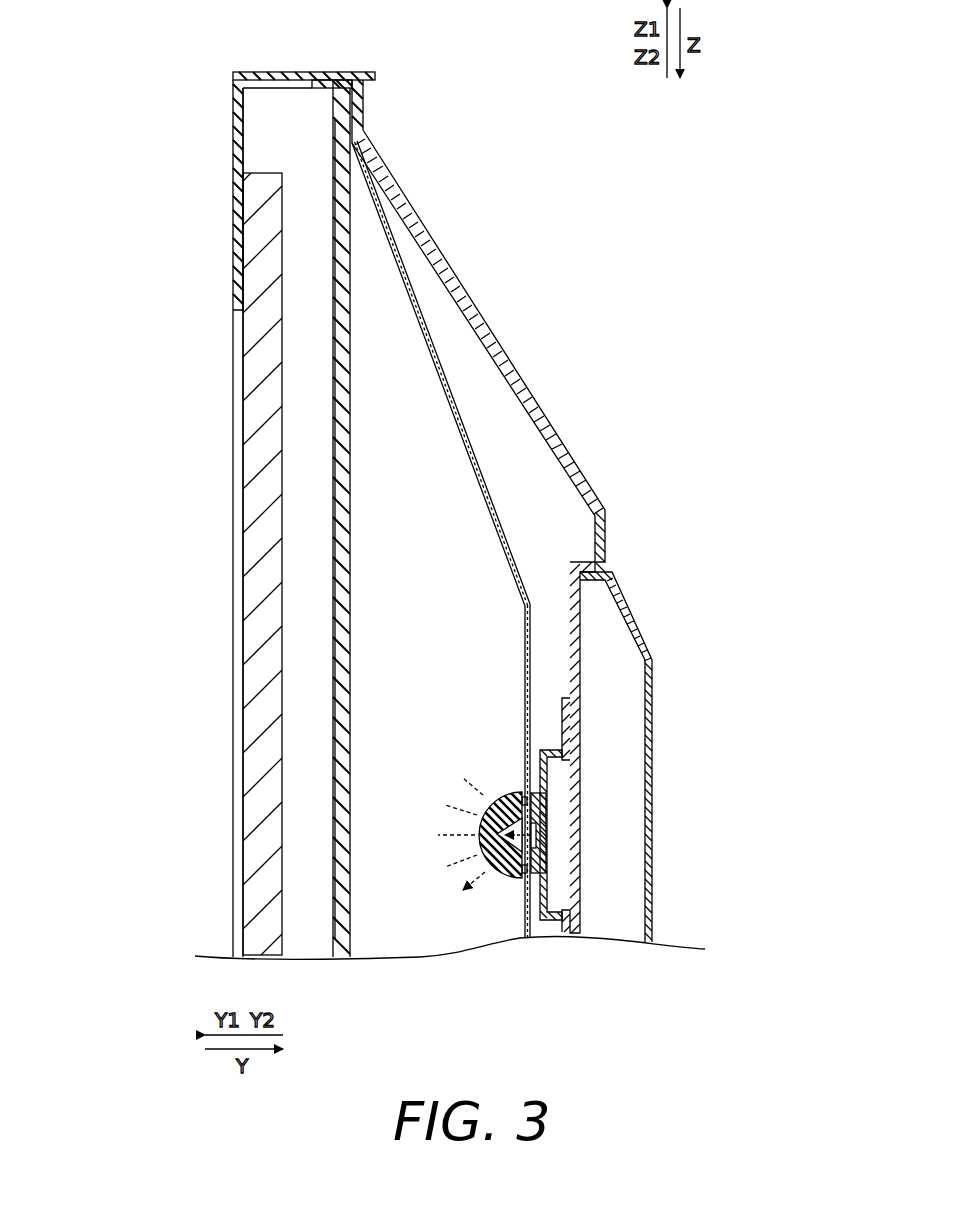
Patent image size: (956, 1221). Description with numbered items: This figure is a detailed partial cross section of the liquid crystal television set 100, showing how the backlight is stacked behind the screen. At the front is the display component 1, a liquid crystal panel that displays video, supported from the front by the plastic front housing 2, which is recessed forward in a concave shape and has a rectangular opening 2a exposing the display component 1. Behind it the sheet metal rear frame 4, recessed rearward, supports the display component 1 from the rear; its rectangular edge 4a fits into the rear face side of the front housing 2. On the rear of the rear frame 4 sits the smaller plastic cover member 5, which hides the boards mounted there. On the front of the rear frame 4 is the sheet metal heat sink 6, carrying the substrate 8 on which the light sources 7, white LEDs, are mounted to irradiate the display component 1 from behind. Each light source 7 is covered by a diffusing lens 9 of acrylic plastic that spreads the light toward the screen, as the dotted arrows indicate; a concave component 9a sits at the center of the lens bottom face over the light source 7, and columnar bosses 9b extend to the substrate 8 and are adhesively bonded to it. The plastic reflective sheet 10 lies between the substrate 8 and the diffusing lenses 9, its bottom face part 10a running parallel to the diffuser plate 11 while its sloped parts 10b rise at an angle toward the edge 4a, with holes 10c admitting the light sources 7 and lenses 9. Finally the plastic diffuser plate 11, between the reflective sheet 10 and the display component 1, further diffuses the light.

The liquid crystal television set 100 is at (466, 42).
The display component 1 is at (253, 408).
The front housing 2 is at (337, 486).
The rectangular opening 2a is at (235, 310).
The rear frame 4 is at (478, 326).
The rectangular edge 4a is at (363, 122).
The cover member 5 is at (648, 645).
The sheet metal heat sink 6 is at (577, 735).
The light sources 7 is at (537, 840).
The substrate 8 is at (534, 826).
The diffusing lenses 9 is at (588, 888).
The concave components 9a is at (512, 870).
The columnar bosses 9b is at (527, 805).
The reflective sheet 10 is at (560, 571).
The bottom face part 10a is at (532, 658).
The sloped parts 10b is at (510, 556).
The holes 10c is at (548, 920).
The diffuser plate 11 is at (343, 397).